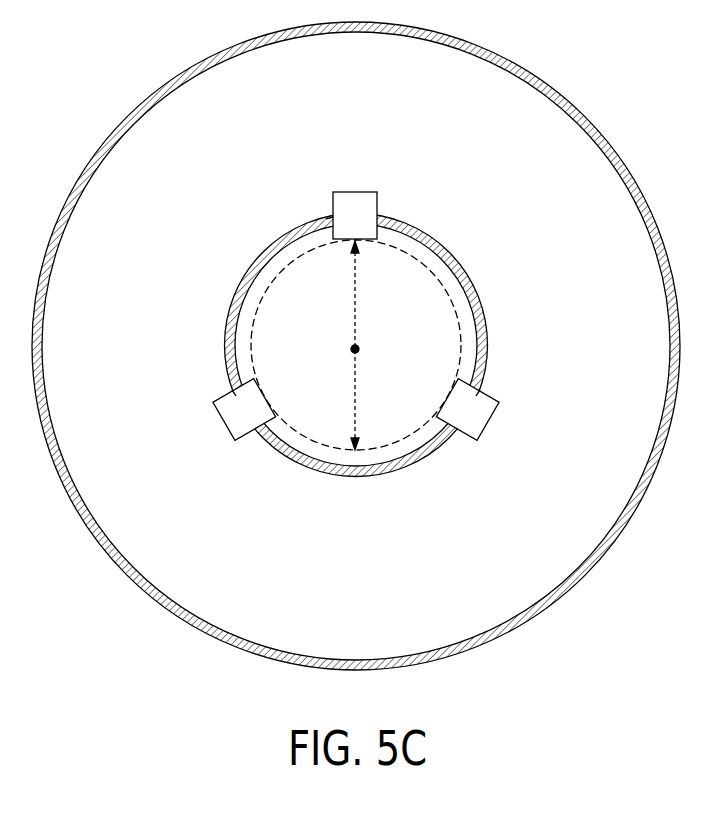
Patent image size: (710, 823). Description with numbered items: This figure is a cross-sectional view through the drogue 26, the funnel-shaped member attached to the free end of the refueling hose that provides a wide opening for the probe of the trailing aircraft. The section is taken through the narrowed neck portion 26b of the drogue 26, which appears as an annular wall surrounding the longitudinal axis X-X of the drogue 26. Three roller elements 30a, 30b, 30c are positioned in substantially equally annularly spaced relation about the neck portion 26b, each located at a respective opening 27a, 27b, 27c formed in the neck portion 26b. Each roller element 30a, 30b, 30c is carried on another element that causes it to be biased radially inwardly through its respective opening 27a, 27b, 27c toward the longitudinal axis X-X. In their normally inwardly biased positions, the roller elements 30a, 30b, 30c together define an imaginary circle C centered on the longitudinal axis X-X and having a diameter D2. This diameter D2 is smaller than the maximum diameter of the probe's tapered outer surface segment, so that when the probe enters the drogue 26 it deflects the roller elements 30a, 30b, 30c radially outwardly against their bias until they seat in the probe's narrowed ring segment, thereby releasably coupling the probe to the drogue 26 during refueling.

The drogue 26 is at (483, 43).
The neck portion 26b is at (480, 300).
The opening 27a is at (333, 218).
The opening 27b is at (233, 392).
The opening 27c is at (477, 392).
The roller element 30a is at (378, 208).
The roller element 30b is at (222, 425).
The roller element 30c is at (488, 425).
The imaginary circle C is at (252, 307).
The diameter of imaginary circle D2 is at (360, 332).
The longitudinal axis X-X is at (350, 350).